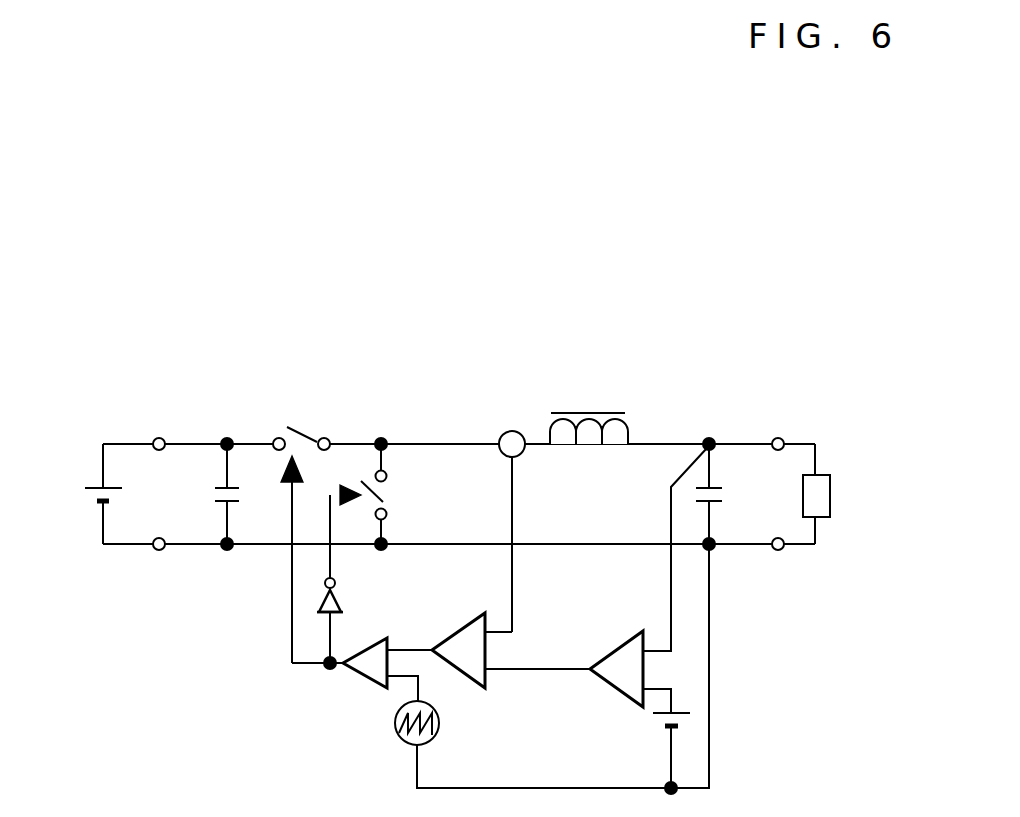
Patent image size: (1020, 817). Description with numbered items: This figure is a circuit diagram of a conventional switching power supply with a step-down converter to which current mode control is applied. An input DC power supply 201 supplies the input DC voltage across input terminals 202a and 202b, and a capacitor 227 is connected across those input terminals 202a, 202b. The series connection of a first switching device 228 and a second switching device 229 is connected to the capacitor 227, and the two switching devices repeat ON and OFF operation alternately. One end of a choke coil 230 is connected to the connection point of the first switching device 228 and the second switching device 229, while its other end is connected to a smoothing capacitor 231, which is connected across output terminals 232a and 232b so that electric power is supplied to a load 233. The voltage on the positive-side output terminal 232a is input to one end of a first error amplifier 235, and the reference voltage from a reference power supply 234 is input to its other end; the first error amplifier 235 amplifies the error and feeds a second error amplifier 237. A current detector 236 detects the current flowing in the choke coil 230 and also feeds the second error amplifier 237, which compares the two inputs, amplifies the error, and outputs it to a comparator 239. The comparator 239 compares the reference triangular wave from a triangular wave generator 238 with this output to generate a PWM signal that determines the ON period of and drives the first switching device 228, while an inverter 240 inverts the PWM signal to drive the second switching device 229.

The input DC power supply 201 is at (100, 487).
The input terminal 202a is at (155, 440).
The input terminal 202b is at (157, 550).
The capacitor 227 is at (218, 487).
The first switching device 228 is at (287, 427).
The second switching device 229 is at (376, 498).
The choke coil 230 is at (590, 412).
The smoothing capacitor 231 is at (718, 490).
The output terminal 232a is at (782, 438).
The output terminal 232b is at (782, 551).
The load 233 is at (826, 517).
The reference power supply 234 is at (665, 727).
The first error amplifier 235 is at (620, 690).
The current detector 236 is at (503, 436).
The second error amplifier 237 is at (480, 688).
The triangular wave generator 238 is at (397, 731).
The comparator 239 is at (360, 682).
The inverter 240 is at (342, 600).